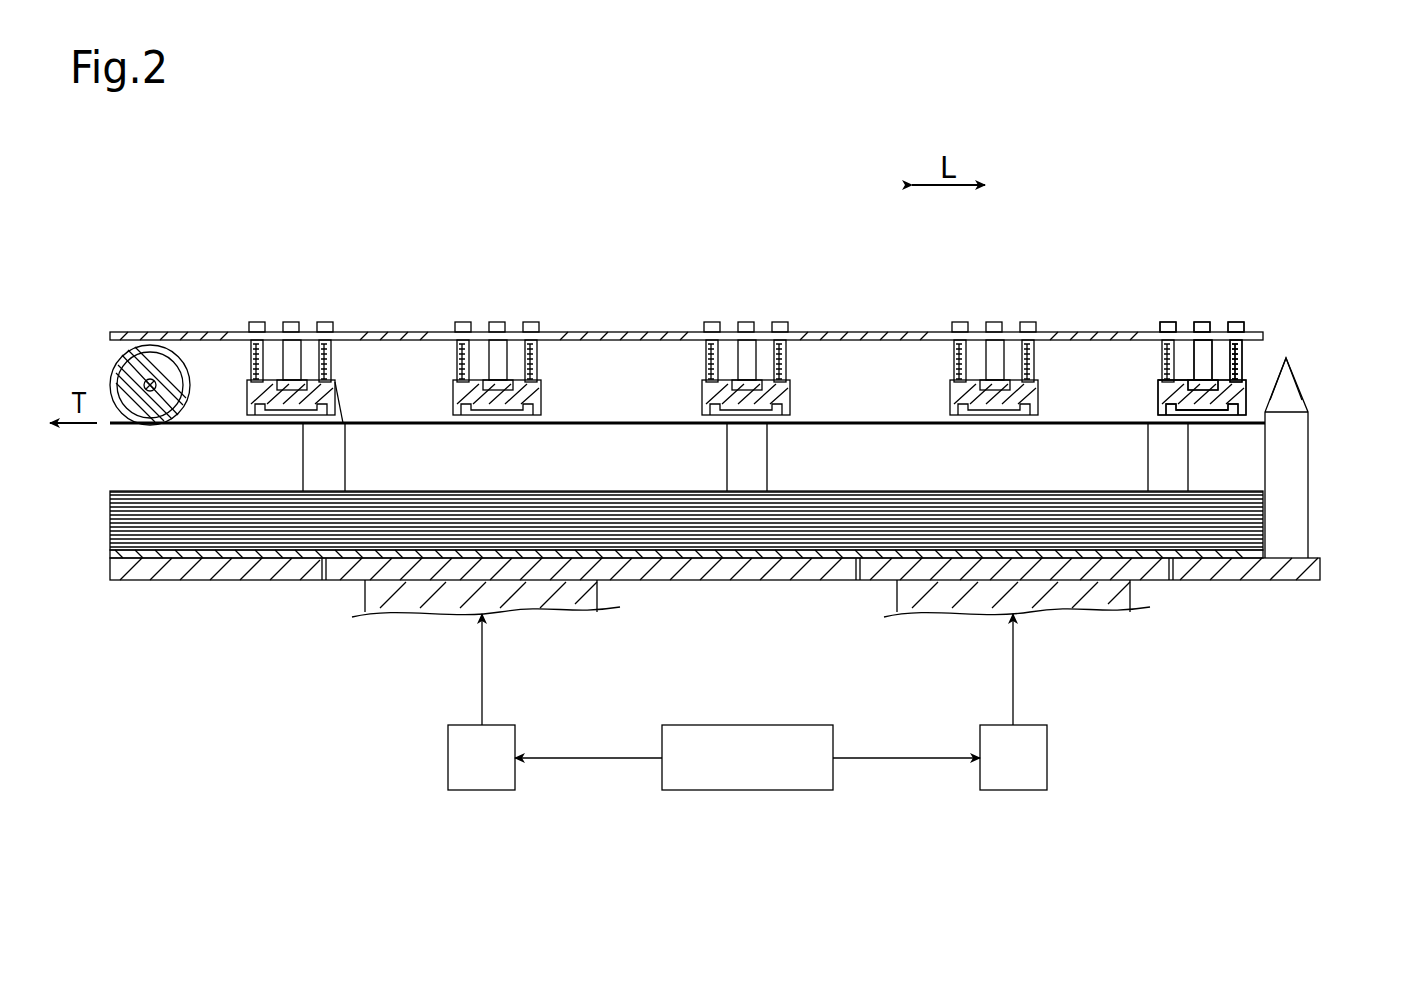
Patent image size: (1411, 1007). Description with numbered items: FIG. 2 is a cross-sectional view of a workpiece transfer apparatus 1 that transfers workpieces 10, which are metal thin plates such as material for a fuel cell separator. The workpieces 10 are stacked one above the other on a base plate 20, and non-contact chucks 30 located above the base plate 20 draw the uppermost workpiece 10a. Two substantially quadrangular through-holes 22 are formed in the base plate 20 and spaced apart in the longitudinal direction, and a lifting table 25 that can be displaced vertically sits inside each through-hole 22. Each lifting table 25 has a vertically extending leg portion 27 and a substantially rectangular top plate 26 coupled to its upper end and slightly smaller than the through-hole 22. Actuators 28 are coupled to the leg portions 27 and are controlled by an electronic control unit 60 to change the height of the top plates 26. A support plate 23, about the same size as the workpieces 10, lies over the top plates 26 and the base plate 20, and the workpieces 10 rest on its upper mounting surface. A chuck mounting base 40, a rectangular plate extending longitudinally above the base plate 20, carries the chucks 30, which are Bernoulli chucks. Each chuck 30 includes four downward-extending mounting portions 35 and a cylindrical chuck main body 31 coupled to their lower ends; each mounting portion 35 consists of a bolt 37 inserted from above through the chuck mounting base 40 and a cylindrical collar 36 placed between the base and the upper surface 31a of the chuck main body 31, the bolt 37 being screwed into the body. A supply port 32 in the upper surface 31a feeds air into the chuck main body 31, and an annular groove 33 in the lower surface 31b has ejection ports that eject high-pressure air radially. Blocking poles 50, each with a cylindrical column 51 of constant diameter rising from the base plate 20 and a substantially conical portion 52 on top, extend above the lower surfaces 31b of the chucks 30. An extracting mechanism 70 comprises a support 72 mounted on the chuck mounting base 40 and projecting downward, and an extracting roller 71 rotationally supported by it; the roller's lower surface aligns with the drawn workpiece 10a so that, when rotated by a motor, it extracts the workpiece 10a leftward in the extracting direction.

The transfer apparatus 1 is at (1326, 216).
The workpieces 10 is at (110, 493).
The uppermost workpiece 10a is at (870, 428).
The base plate 20 is at (1322, 570).
The through-holes 22 is at (326, 582).
The support plate 23 is at (1266, 555).
The lifting table 25 is at (805, 625).
The top plate 26 is at (598, 600).
The leg portion 27 is at (676, 596).
The actuators 28 is at (482, 791).
The non-contact chucks 30 is at (246, 393).
The chuck main body 31 is at (1150, 404).
The upper surface of chuck main body 31a is at (1160, 380).
The lower surface of chuck main body 31b is at (1162, 418).
The supply port 32 is at (1242, 372).
The annular groove 33 is at (1229, 422).
The mounting portions 35 is at (1164, 322).
The cylindrical collar 36 is at (1208, 366).
The bolt 37 is at (1238, 334).
The chuck mounting base 40 is at (1263, 332).
The blocking poles 50 is at (814, 458).
The column 51 is at (1312, 490).
The conical portion 52 is at (1308, 386).
The electronic control unit 60 is at (750, 791).
The extracting mechanism 70 is at (124, 333).
The extracting roller 71 is at (118, 364).
The support 72 is at (134, 348).